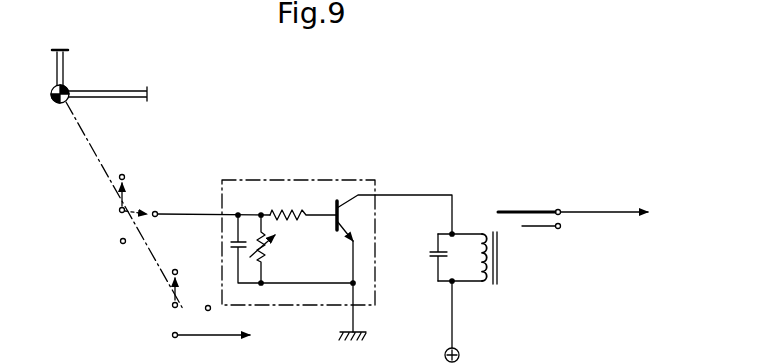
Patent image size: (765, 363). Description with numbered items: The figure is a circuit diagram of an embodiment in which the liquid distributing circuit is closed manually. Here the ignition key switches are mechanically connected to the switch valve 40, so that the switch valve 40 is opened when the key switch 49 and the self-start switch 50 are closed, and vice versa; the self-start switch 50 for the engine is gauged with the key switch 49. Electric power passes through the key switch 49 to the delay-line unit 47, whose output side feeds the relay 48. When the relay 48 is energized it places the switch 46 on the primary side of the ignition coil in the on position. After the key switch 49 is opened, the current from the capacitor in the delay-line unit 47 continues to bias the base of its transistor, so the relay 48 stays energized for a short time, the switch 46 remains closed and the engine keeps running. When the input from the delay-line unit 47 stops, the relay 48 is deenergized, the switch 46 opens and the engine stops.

The switch valve 40 is at (71, 87).
The switch 46 is at (522, 217).
The delay-line unit 47 is at (312, 178).
The relay 48 is at (485, 282).
The key switch 49 is at (127, 179).
The self-start switch 50 is at (170, 299).